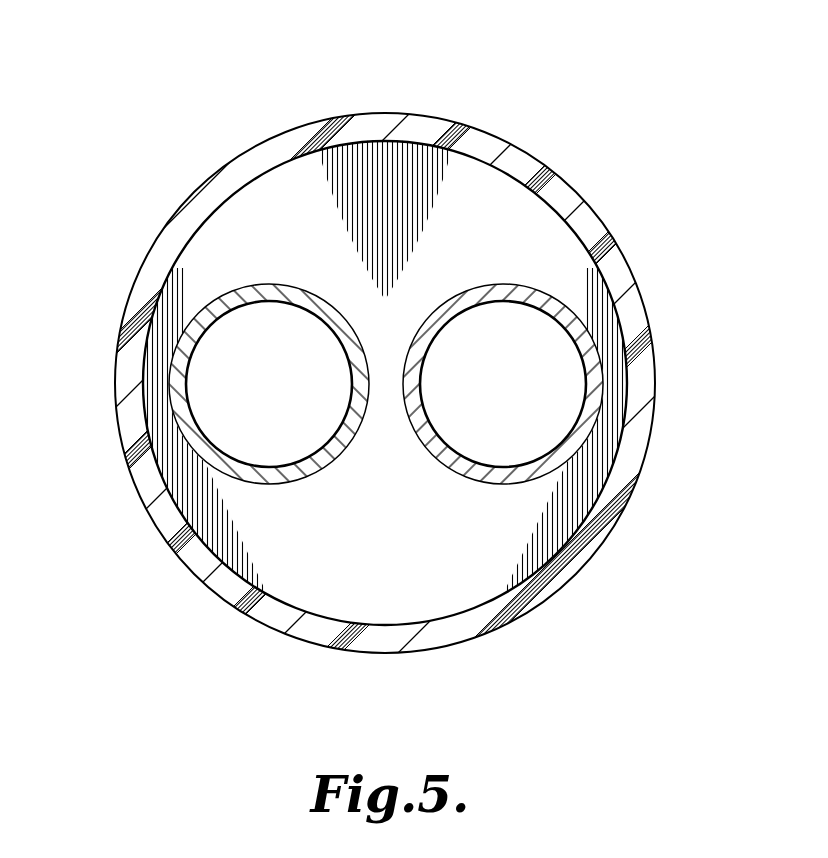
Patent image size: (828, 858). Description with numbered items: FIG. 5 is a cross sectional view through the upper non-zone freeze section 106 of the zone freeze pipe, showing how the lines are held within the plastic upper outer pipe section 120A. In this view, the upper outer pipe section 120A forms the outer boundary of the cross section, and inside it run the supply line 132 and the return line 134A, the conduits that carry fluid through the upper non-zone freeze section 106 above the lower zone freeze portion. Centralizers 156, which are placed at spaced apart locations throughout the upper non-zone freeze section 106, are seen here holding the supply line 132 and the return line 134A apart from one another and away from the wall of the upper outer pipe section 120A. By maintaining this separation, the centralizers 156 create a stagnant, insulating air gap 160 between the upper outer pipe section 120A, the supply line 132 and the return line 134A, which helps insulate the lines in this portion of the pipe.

The upper non-zone freeze section 106 is at (396, 394).
The upper outer pipe section 120A is at (487, 136).
The supply line 132 is at (540, 300).
The return line 134A is at (200, 311).
The centralizers 156 is at (398, 554).
The insulating air gap 160 is at (231, 235).